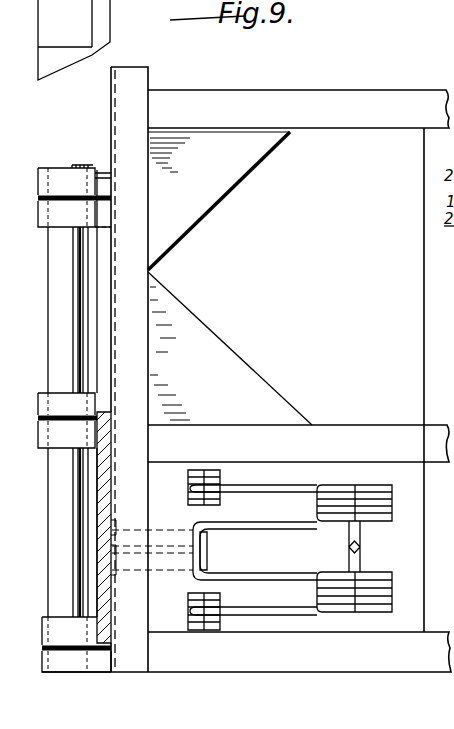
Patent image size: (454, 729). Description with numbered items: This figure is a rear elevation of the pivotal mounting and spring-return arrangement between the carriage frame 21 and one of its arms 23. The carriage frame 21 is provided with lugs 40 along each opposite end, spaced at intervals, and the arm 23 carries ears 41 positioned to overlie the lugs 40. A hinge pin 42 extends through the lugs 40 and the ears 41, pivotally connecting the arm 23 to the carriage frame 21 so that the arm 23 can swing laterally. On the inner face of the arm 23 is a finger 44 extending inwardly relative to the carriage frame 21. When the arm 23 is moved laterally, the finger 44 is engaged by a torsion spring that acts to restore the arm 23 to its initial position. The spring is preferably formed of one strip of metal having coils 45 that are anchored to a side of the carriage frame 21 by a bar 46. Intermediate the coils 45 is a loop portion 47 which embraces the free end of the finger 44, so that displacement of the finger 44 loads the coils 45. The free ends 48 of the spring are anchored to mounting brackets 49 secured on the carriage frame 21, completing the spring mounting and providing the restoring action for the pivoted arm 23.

The carriage frame 21 is at (419, 100).
The arm 23 is at (108, 628).
The lug 40 is at (45, 227).
The ear 41 is at (45, 180).
The hinge pin 42 is at (58, 542).
The finger 44 is at (208, 553).
The coil 45 is at (333, 492).
The bar 46 is at (350, 534).
The loop portion 47 is at (195, 527).
The free end of spring 48 is at (297, 615).
The mounting bracket 49 is at (207, 472).